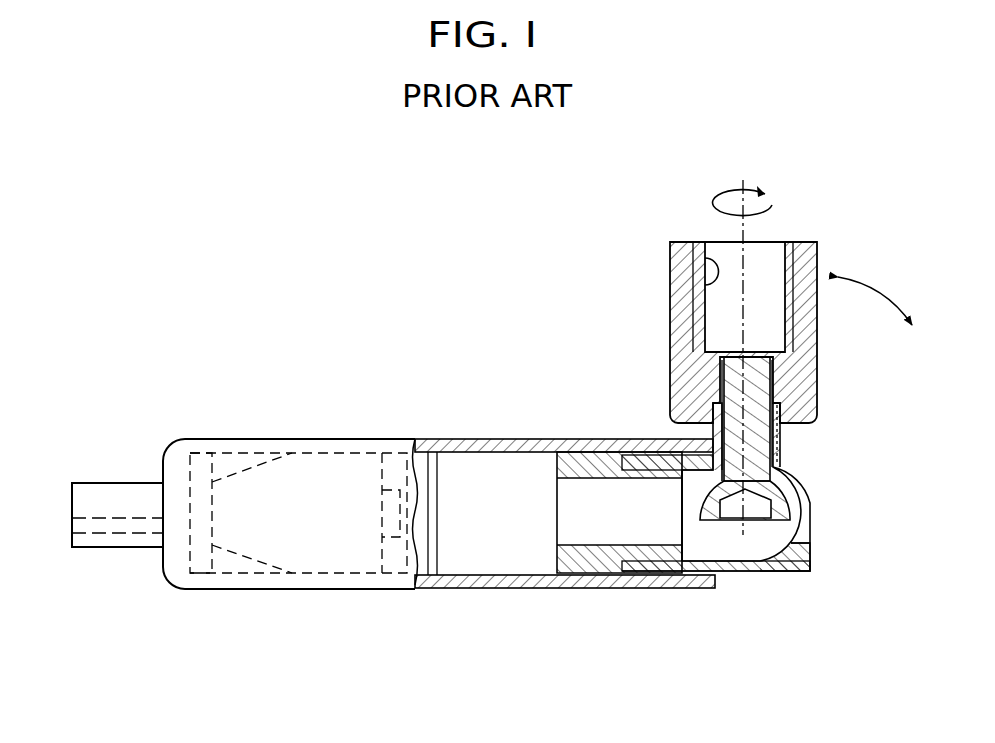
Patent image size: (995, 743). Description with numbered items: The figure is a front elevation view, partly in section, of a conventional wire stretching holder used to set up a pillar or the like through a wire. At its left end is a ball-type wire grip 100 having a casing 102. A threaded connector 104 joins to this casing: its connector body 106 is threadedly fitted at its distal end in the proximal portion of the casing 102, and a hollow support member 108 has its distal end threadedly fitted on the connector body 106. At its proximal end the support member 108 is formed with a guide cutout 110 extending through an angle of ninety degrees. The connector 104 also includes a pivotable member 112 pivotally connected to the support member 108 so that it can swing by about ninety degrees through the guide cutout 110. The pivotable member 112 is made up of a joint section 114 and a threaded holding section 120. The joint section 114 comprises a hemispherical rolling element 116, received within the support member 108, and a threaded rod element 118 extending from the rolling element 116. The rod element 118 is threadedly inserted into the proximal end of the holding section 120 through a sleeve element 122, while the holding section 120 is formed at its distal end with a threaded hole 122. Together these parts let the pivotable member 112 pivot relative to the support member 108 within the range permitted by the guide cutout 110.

The ball-type wire grip 100 is at (298, 421).
The casing 102 is at (378, 437).
The threaded connector 104 is at (696, 597).
The connector body 106 is at (595, 565).
The hollow support member 108 is at (800, 572).
The guide cutout 110 is at (800, 530).
The pivotable member 112 is at (832, 398).
The joint section 114 is at (731, 534).
The hemispherical rolling element 116 is at (790, 497).
The threaded rod element 118 is at (735, 387).
The threaded holding section 120 is at (805, 341).
The sleeve element 122 is at (705, 272).